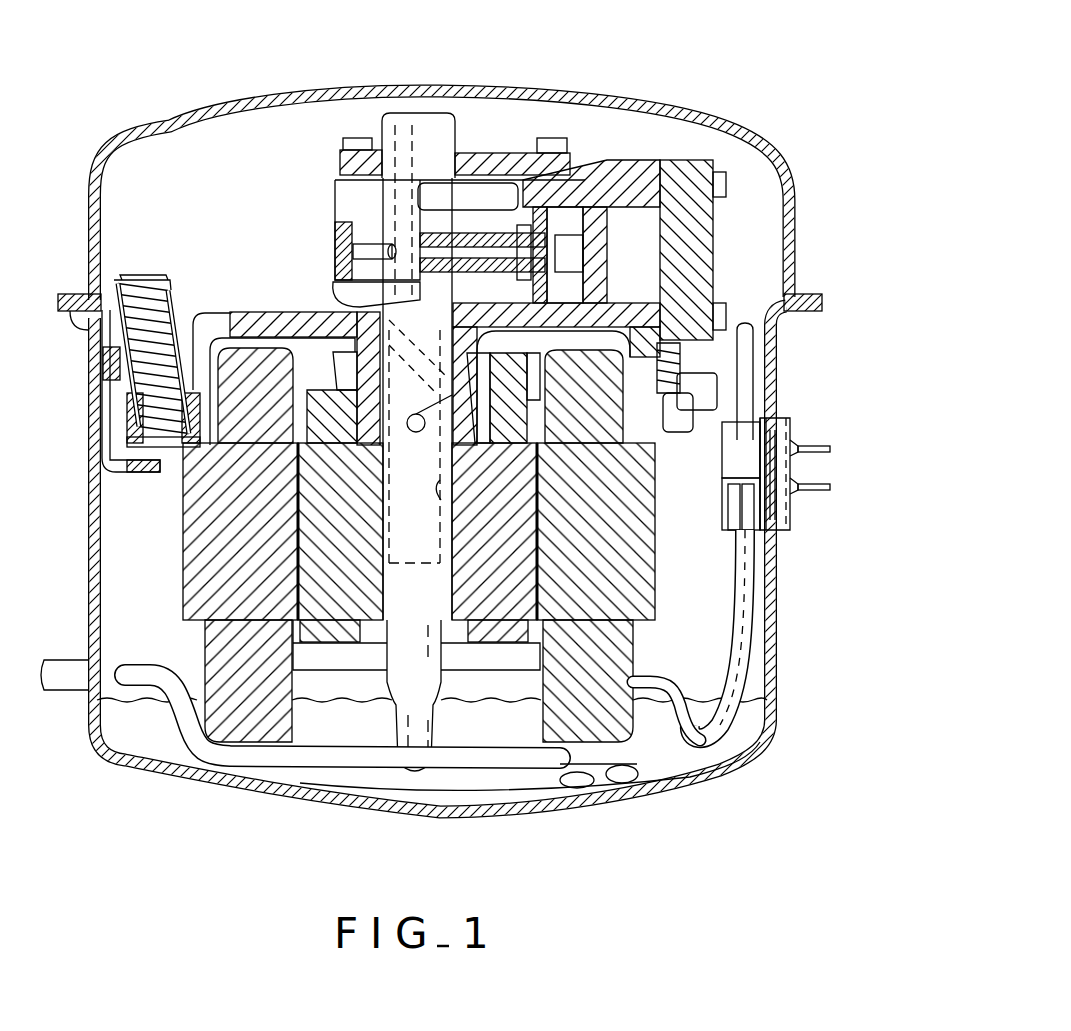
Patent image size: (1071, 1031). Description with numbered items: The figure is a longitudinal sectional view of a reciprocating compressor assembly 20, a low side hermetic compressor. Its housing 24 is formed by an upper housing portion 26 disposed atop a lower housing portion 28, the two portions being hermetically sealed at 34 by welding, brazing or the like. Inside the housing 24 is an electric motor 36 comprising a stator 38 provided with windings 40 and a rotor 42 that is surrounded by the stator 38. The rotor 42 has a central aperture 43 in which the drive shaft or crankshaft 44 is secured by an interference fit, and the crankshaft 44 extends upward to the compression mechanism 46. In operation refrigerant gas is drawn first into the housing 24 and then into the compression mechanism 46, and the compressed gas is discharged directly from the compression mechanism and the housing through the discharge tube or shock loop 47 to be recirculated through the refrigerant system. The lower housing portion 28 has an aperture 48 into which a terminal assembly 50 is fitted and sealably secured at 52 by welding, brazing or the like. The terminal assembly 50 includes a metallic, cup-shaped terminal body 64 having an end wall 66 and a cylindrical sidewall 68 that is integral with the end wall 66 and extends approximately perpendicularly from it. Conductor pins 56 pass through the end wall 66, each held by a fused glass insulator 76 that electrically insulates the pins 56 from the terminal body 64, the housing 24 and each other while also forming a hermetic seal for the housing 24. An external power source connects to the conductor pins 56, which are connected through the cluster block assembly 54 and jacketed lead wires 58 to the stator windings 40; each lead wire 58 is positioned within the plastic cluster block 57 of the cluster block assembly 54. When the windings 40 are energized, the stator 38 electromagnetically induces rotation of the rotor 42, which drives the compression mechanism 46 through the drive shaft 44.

The reciprocating compressor assembly 20 is at (711, 72).
The housing 24 is at (796, 238).
The upper housing portion 26 is at (468, 88).
The lower housing portion 28 is at (674, 789).
The hermetic seal 34 is at (72, 314).
The electric motor 36 is at (162, 562).
The stator 38 is at (192, 495).
The windings 40 is at (213, 655).
The rotor 42 is at (318, 520).
The central aperture 43 is at (441, 500).
The crankshaft 44 is at (433, 459).
The compression mechanism 46 is at (594, 150).
The discharge tube 47 is at (64, 682).
The aperture 48 is at (778, 535).
The terminal assembly 50 is at (806, 420).
The sealed joint 52 is at (776, 416).
The cluster block assembly 54 is at (702, 519).
The conductor pins 56 is at (828, 448).
The cluster block 57 is at (726, 446).
The lead wires 58 is at (725, 733).
The terminal body 64 is at (788, 500).
The end wall 66 is at (793, 436).
The sidewall 68 is at (780, 527).
The fused glass insulator 76 is at (800, 484).